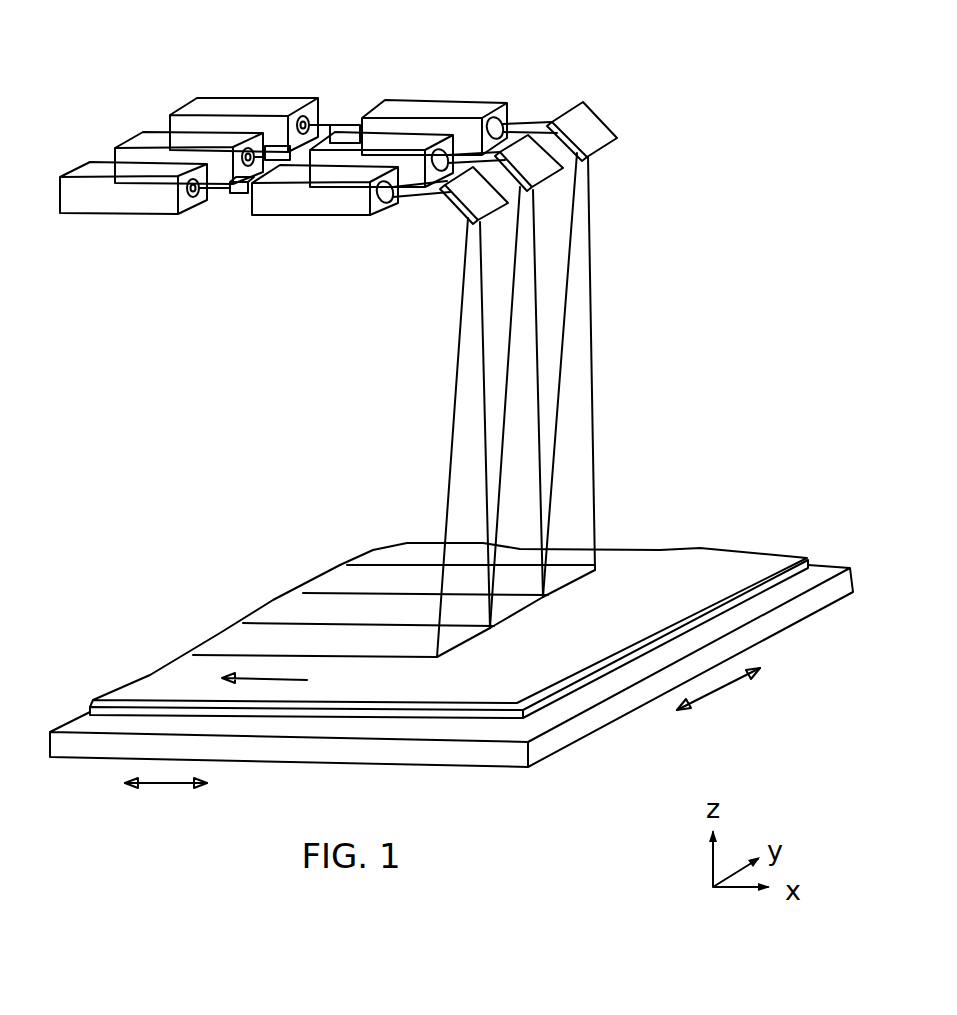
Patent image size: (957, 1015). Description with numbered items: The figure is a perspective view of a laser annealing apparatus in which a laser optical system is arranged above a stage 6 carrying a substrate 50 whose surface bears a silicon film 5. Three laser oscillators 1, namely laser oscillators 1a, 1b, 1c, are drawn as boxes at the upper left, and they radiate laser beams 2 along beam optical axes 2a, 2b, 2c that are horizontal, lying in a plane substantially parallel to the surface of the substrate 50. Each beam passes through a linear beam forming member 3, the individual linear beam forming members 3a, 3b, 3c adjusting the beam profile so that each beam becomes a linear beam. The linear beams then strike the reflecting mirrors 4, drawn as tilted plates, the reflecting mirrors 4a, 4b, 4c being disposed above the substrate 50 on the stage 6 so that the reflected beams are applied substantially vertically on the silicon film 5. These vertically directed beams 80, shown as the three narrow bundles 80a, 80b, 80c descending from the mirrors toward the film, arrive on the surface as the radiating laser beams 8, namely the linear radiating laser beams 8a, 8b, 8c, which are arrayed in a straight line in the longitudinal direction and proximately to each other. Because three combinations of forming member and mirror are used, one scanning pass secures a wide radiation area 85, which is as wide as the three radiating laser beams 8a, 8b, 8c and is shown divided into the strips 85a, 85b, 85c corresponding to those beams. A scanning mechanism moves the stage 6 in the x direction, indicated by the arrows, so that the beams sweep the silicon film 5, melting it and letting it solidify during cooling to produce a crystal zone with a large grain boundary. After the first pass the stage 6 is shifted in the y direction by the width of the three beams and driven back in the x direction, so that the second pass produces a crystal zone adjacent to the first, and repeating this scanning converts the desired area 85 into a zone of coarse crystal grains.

The laser oscillators 1 is at (223, 94).
The laser oscillator 1a is at (88, 167).
The laser oscillator 1b is at (140, 137).
The laser oscillator 1c is at (193, 103).
The beam optical axes 2 is at (333, 120).
The laser beam 2a is at (222, 193).
The laser beam 2b is at (272, 146).
The laser beam 2c is at (345, 125).
The linear beam forming member 3 is at (430, 92).
The linear beam forming member 3a is at (358, 218).
The linear beam forming member 3b is at (323, 147).
The linear beam forming member 3c is at (470, 110).
The reflecting mirrors 4 is at (630, 115).
The reflecting mirror 4a is at (462, 207).
The reflecting mirror 4b is at (525, 145).
The reflecting mirror 4c is at (583, 115).
The silicon film 5 is at (668, 568).
The substrate 50 is at (790, 560).
The stage 6 is at (558, 742).
The radiating laser beams 8 is at (606, 608).
The radiating laser beam 8a is at (452, 650).
The radiating laser beam 8b is at (518, 610).
The radiating laser beam 8c is at (580, 578).
The light beams 80 is at (375, 315).
The light beam 80a is at (453, 400).
The light beam 80b is at (510, 363).
The light beam 80c is at (562, 332).
The radiation area 85 is at (323, 520).
The scanned region 85a is at (222, 637).
The scanned region 85b is at (278, 608).
The scanned region 85c is at (328, 582).